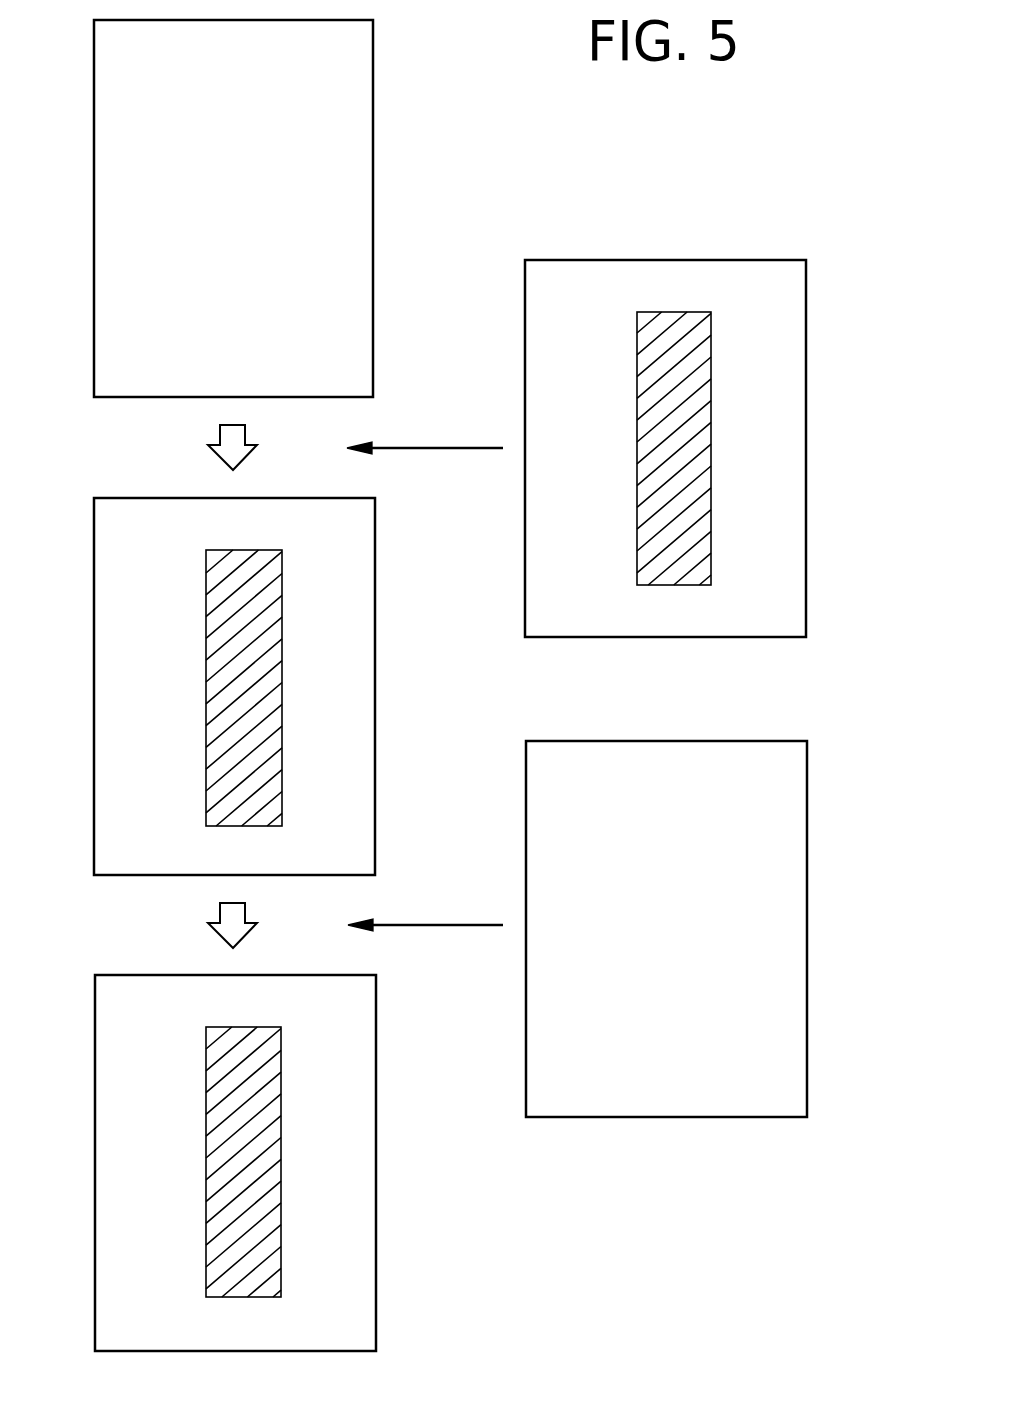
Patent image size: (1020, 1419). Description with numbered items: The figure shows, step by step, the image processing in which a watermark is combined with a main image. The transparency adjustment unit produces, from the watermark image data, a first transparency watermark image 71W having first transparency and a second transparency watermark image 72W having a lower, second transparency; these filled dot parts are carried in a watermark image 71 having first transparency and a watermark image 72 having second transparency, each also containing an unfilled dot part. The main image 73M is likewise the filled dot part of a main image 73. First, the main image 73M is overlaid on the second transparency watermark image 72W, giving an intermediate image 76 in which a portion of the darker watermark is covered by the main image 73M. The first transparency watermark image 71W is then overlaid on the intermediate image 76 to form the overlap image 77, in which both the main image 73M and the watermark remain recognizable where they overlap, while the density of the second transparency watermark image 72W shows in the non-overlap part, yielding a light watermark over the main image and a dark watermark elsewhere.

The watermark image having first transparency 71 is at (813, 770).
The first transparency watermark image 71W is at (748, 923).
The watermark image having second transparency 72 is at (388, 75).
The second transparency watermark image 72W is at (283, 237).
The main image 73 is at (820, 323).
The main image 73M is at (732, 465).
The intermediate image 76 is at (393, 758).
The overlap image 77 is at (388, 1259).